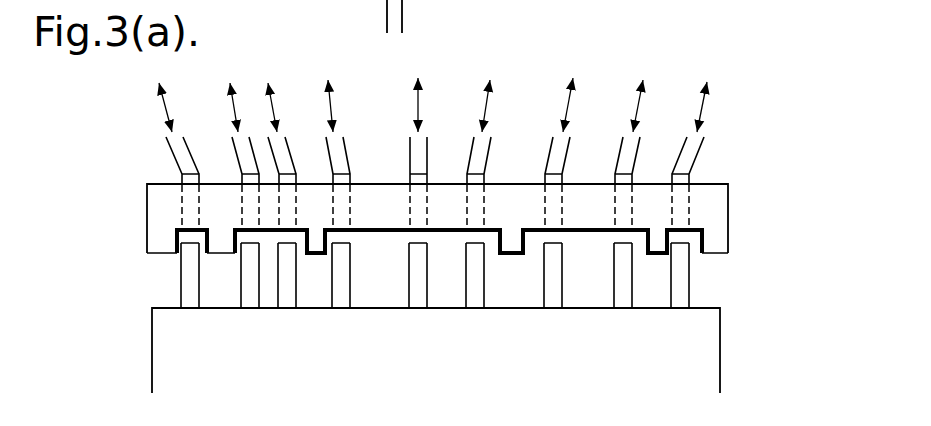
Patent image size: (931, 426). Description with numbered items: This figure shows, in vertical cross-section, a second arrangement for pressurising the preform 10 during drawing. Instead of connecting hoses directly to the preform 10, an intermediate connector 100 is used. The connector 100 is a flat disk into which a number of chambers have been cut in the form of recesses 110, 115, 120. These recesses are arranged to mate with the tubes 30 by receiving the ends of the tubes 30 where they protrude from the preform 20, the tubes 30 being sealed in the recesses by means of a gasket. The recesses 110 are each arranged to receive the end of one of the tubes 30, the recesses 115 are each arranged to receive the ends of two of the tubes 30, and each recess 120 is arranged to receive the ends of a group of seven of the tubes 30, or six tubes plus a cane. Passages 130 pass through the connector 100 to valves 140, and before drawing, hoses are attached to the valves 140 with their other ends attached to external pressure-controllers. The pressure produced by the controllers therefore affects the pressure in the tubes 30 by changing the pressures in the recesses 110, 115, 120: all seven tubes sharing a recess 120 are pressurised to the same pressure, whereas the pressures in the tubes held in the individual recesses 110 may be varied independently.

The preform 10 is at (423, 0).
The preform 20 is at (723, 358).
The tubes 30 is at (691, 277).
The intermediate connector 100 is at (133, 232).
The recesses 110 is at (181, 255).
The recesses 115 is at (273, 235).
The recess 120 is at (382, 230).
The passages 130 is at (188, 209).
The valves 140 is at (182, 177).